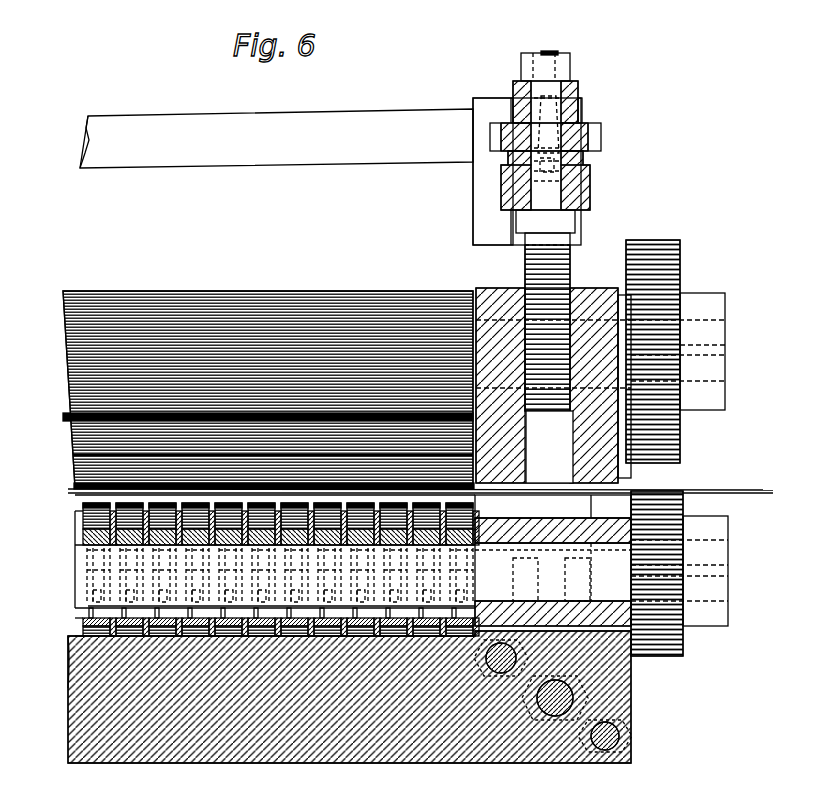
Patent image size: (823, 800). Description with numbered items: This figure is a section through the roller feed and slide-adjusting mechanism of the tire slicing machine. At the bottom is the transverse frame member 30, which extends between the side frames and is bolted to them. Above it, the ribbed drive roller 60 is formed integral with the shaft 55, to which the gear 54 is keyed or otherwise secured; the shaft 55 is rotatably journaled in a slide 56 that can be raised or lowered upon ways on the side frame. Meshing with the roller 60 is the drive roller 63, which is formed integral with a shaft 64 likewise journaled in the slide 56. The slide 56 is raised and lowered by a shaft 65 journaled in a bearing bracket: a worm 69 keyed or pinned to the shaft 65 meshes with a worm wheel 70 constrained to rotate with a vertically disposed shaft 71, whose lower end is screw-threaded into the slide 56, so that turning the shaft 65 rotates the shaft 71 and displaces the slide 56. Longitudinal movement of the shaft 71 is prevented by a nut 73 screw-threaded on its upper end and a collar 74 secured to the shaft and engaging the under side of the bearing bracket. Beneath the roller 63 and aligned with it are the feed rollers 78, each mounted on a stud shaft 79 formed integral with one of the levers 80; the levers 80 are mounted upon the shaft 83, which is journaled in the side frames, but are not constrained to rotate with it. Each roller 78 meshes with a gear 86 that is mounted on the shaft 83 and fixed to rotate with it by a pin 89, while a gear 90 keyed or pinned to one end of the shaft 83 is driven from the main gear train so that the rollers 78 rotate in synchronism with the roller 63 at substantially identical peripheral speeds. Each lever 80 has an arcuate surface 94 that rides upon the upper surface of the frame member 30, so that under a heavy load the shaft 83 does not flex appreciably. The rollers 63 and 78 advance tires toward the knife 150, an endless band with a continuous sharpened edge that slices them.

The transverse frame member 30 is at (502, 756).
The gear 54 is at (666, 271).
The shaft 55 is at (708, 373).
The slide 56 is at (584, 283).
The ribbed drive roller 60 is at (323, 284).
The drive roller 63 is at (66, 447).
The shaft 64 is at (368, 106).
The shaft 65 is at (583, 184).
The worm 69 is at (565, 101).
The worm wheel 70 is at (585, 118).
The vertically disposed shaft 71 is at (536, 45).
The nut 73 is at (553, 56).
The collar 74 is at (568, 216).
The roller 78 is at (78, 477).
The stud shaft 79 is at (74, 501).
The lever 80 is at (72, 621).
The shaft 83 is at (76, 556).
The gear 86 is at (432, 530).
The pin 89 is at (125, 600).
The gear 90 is at (678, 506).
The arcuate surface 94 is at (88, 632).
The knife 150 is at (740, 481).